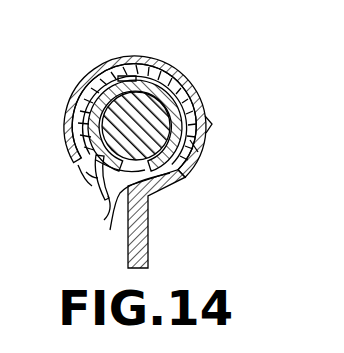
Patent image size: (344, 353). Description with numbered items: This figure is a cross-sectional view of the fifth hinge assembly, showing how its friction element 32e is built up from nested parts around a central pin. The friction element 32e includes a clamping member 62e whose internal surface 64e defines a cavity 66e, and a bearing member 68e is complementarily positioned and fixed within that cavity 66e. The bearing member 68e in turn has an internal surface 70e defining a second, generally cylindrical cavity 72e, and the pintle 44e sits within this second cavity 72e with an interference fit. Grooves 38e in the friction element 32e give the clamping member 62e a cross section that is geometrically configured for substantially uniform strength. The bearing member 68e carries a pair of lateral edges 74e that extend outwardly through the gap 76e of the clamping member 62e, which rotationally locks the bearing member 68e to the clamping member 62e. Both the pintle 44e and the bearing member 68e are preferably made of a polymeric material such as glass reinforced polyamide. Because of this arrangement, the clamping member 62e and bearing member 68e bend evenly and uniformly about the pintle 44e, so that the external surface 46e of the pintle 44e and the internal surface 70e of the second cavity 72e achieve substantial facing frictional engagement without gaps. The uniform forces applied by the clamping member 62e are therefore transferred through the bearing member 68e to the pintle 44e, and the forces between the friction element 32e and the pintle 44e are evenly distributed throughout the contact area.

The friction element 32e is at (194, 73).
The grooves 38e is at (100, 82).
The pintle 44e is at (135, 98).
The external surface 46e is at (122, 78).
The clamping member 62e is at (212, 126).
The internal surface 64e is at (150, 196).
The cavity 66e is at (130, 206).
The bearing member 68e is at (202, 148).
The internal surface 70e is at (103, 196).
The second cavity 72e is at (199, 100).
The lateral edges 74e is at (103, 212).
The gap 76e is at (88, 171).